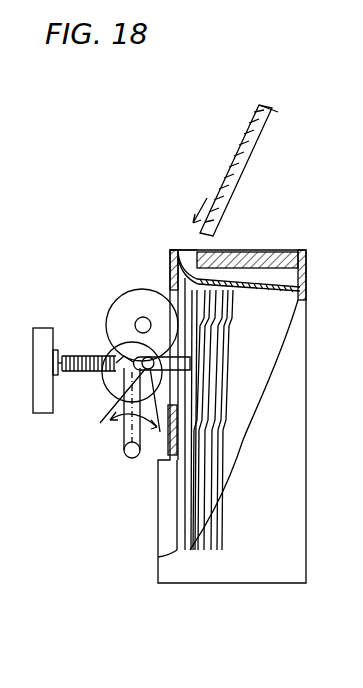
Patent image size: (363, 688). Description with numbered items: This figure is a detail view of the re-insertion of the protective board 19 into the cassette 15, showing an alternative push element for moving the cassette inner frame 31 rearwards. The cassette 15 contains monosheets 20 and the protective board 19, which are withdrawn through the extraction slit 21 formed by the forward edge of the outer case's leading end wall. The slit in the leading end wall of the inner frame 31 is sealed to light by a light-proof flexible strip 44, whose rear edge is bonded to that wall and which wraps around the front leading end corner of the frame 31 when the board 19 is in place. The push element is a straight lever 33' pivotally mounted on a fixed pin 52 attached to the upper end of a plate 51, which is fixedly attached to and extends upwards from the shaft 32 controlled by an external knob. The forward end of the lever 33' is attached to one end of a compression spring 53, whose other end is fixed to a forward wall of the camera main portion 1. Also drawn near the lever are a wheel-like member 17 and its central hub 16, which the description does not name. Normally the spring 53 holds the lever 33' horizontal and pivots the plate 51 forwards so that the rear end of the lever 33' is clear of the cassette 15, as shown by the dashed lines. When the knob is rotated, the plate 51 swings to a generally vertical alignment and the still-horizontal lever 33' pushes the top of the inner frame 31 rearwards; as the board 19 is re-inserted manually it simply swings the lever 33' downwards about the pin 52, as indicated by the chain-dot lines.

The camera main portion 1 is at (35, 378).
The cassette 15 is at (228, 567).
The hub 16 is at (143, 317).
The wheel 17 is at (125, 300).
The protective board 19 is at (243, 165).
The monosheets 20 is at (210, 472).
The extraction slit 21 is at (183, 250).
The cassette inner frame 31 is at (165, 462).
The shaft 32 is at (128, 452).
The straight lever 33' is at (229, 420).
The light-proof flexible strip 44 is at (197, 249).
The plate 51 is at (116, 419).
The fixed pin 52 is at (142, 366).
The compression spring 53 is at (82, 355).